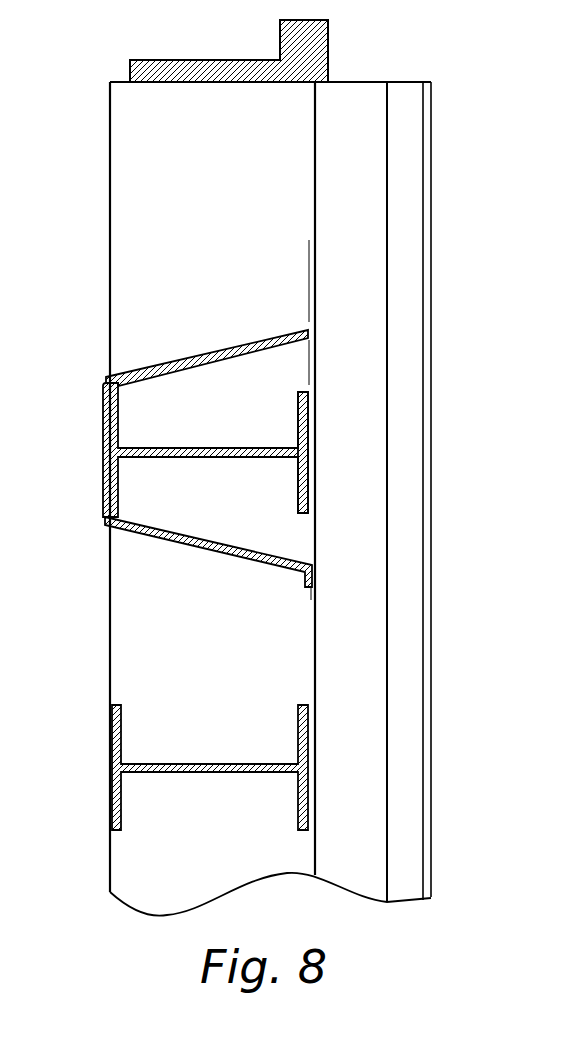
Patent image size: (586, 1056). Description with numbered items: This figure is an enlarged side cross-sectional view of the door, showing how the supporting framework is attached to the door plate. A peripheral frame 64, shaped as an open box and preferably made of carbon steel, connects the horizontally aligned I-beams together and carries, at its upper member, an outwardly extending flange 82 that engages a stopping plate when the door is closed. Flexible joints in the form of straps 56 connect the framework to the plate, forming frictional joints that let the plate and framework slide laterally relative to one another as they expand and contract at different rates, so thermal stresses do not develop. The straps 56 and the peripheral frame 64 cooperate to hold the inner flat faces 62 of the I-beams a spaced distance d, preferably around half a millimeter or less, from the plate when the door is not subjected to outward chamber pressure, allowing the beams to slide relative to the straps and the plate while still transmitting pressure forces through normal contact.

The flange 82 is at (208, 60).
The peripheral frame 64 is at (162, 210).
The strap 56 is at (187, 446).
The flat face 62 is at (310, 475).
The spaced distance d is at (357, 251).